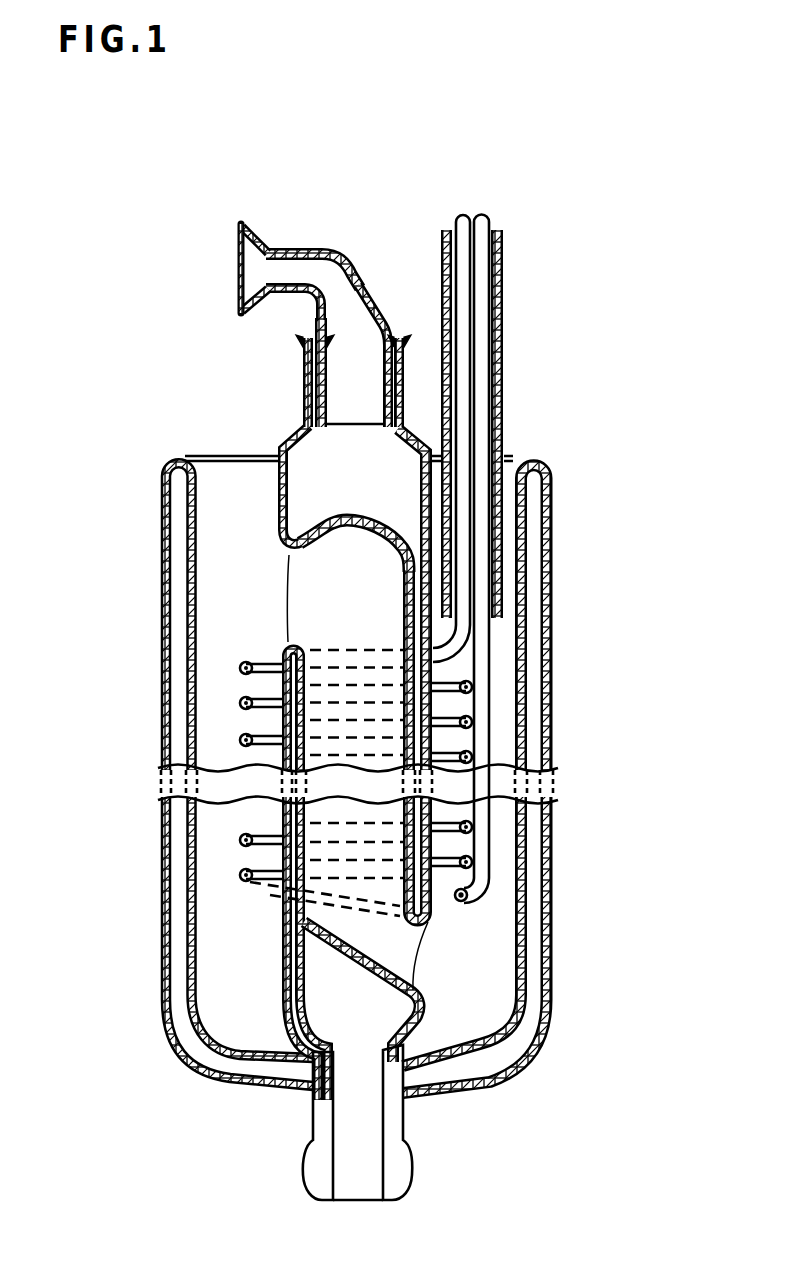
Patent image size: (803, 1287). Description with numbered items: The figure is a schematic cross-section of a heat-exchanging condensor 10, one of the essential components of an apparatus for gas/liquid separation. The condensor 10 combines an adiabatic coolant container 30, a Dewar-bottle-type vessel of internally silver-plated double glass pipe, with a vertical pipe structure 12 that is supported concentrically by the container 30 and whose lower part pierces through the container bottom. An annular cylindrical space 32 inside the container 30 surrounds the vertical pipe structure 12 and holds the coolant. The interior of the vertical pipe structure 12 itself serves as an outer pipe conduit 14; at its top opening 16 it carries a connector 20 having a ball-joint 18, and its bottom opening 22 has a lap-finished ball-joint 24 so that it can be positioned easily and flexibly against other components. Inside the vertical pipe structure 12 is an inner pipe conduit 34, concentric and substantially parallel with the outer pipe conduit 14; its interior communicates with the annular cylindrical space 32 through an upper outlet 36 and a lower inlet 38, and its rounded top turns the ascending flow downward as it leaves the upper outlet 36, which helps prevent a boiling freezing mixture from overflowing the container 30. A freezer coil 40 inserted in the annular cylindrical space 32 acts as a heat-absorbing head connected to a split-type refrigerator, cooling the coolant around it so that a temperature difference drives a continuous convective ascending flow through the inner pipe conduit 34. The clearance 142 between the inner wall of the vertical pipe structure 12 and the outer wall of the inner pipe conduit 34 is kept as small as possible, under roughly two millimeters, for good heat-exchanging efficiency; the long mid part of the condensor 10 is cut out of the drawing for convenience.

The heat-exchanging condensor 10 is at (237, 222).
The vertical pipe structure 12 is at (280, 447).
The outer pipe conduit 14 is at (277, 504).
The clearance 142 is at (418, 570).
The top opening 16 is at (339, 442).
The ball-joint 18 is at (246, 288).
The connector 20 is at (358, 272).
The bottom opening 22 is at (367, 1175).
The ball-joint 24 is at (413, 1153).
The adiabatic coolant container 30 is at (160, 647).
The annular cylindrical space 32 is at (212, 692).
The inner pipe conduit 34 is at (434, 738).
The upper outlet 36 is at (290, 592).
The lower inlet 38 is at (408, 950).
The freezer coil 40 is at (245, 740).